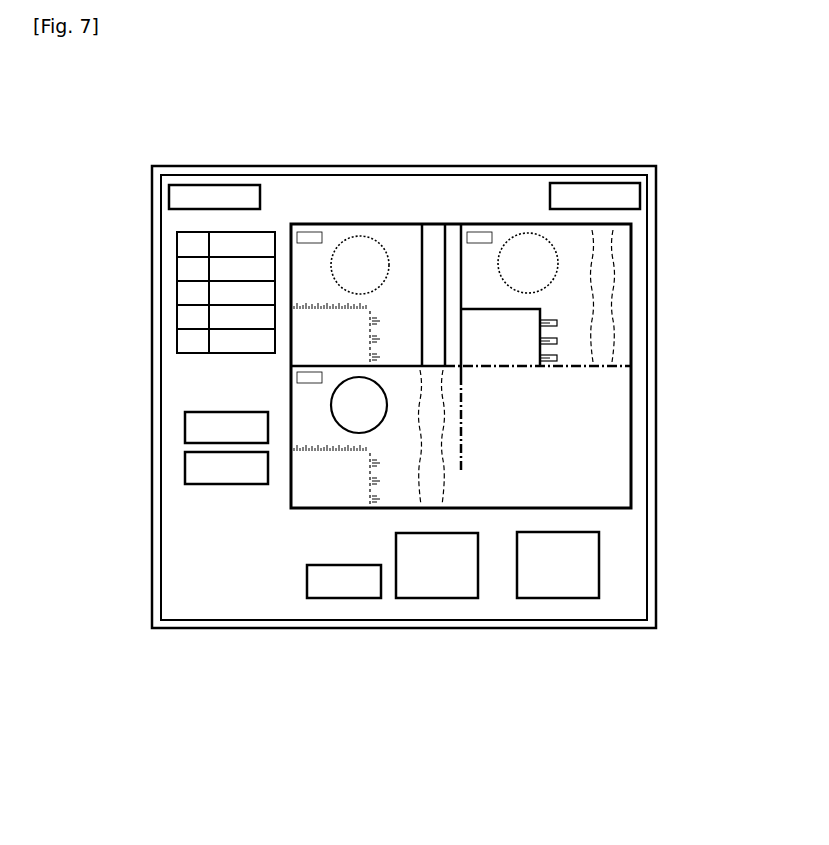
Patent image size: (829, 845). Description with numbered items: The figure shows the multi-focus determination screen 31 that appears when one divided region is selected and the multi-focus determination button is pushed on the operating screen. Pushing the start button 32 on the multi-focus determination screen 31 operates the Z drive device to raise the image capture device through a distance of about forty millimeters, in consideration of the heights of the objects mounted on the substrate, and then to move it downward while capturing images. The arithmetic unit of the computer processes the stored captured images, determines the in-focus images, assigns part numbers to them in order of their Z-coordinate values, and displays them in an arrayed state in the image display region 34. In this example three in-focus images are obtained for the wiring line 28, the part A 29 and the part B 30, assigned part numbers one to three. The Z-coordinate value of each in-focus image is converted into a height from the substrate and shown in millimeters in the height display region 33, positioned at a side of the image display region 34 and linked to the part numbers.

The wiring line 28 is at (433, 230).
The part A 29 is at (507, 330).
The part B 30 is at (345, 408).
The multi-focus determination screen 31 is at (417, 700).
The start button 32 is at (563, 576).
The height display region 33 is at (185, 292).
The image display region 34 is at (632, 428).